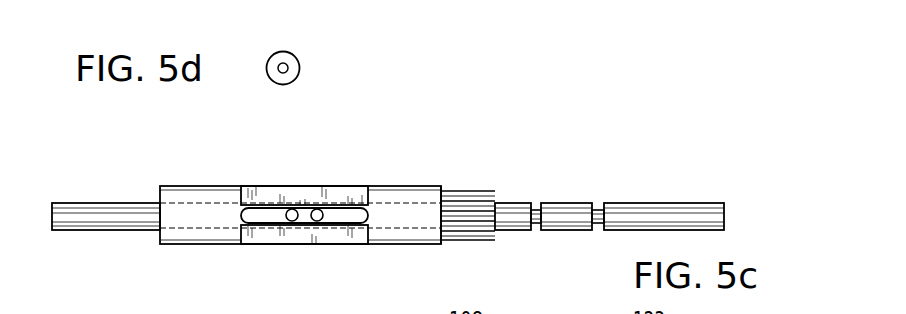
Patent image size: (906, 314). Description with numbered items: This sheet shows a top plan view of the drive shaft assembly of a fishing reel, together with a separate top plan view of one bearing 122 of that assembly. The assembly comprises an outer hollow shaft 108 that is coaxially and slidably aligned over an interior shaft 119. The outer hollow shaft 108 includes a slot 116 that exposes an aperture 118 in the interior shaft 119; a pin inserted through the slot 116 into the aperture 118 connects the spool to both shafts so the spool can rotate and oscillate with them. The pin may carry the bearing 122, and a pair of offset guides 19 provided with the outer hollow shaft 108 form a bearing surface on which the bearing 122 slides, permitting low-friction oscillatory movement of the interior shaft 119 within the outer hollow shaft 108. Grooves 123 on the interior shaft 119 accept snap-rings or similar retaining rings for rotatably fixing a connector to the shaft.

In FIG. 5D, the bearing 122 is at (298, 58).
In FIG. 5C, the interior shaft 119 is at (107, 228).
In FIG. 5C, the outer hollow shaft 108 is at (405, 186).
In FIG. 5C, the offset guides 19 is at (235, 203).
In FIG. 5C, the slot 116 is at (269, 213).
In FIG. 5C, the aperture 118 is at (291, 209).
In FIG. 5C, the grooves 123 is at (597, 210).